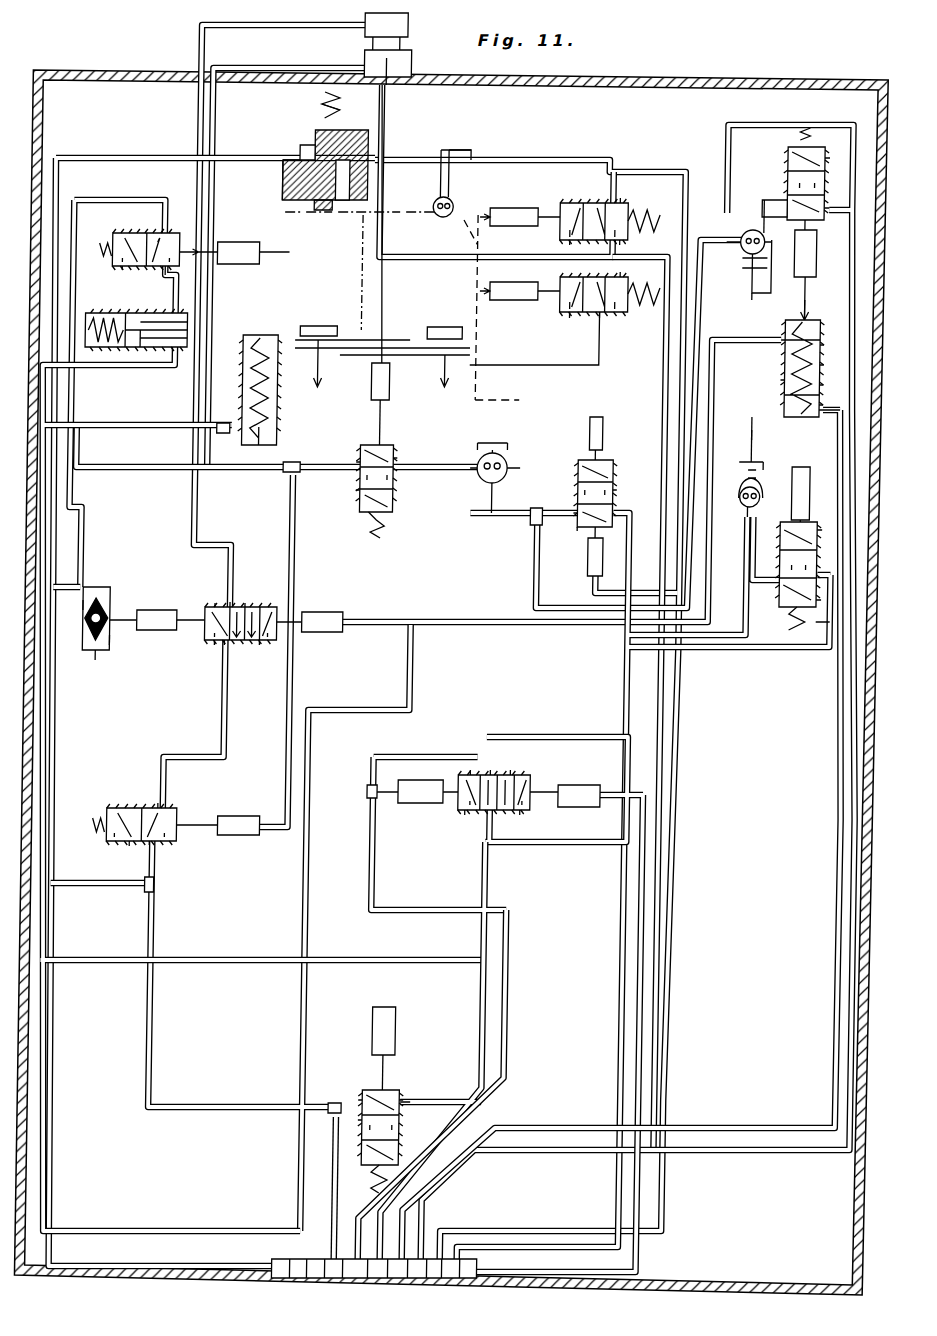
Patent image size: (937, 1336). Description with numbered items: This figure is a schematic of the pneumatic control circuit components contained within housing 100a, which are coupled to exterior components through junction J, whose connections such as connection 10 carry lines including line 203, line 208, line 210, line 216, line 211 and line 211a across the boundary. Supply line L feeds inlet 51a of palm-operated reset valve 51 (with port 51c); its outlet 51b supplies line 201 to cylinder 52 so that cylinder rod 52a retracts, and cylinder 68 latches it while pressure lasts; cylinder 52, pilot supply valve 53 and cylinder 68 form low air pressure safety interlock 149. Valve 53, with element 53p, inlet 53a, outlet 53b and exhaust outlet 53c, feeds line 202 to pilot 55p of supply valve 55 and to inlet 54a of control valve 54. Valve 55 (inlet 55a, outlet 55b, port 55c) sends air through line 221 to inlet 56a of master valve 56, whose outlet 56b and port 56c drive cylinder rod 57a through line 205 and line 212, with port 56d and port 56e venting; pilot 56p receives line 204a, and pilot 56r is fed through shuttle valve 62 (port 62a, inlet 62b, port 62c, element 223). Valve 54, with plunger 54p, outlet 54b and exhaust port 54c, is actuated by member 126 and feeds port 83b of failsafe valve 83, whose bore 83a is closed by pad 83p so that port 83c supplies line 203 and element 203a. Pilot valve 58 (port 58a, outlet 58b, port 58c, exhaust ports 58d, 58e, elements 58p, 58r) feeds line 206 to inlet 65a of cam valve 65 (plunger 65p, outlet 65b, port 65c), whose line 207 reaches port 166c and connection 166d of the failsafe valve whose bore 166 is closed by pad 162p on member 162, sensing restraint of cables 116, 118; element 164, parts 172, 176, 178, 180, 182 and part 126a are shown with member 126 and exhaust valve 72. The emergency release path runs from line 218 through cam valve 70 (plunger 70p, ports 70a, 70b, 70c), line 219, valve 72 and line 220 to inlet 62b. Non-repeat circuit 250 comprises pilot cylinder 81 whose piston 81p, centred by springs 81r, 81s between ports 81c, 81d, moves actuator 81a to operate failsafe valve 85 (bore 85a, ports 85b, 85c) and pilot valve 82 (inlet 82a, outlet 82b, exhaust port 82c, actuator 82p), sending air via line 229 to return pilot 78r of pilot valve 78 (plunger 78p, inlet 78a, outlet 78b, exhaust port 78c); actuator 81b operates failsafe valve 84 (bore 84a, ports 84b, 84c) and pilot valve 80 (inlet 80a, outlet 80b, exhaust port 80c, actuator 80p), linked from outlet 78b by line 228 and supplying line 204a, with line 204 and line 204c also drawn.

The control housing 100a is at (74, 72).
The control system 149 is at (151, 142).
The air supply line 212 is at (253, 22).
The air line 205 is at (293, 68).
The air line 220 is at (231, 165).
The air line 207 is at (559, 148).
The air line 202 is at (85, 199).
The air line 219 is at (431, 258).
The air line 216 is at (605, 730).
The air line 203 is at (794, 125).
The air line 204a is at (351, 625).
The air line 228 is at (701, 665).
The air line 229 is at (743, 230).
The air line 204 is at (815, 418).
The air line 204c is at (820, 335).
The air line 221 is at (263, 738).
The air line 218 is at (595, 372).
The air line 201 is at (110, 372).
The air line 211a is at (73, 585).
The air line 211 is at (496, 886).
The air line 210 is at (637, 778).
The air line 206 is at (555, 845).
The air line 208 is at (628, 165).
The air supply connection 57a is at (379, 108).
The piston 172 is at (294, 142).
The piston port 180 is at (279, 158).
The piston face 182 is at (281, 128).
The spring 176 is at (333, 98).
The spring seat 178 is at (333, 112).
The axis line 72 is at (271, 196).
The cam follower 166 is at (425, 203).
The cam follower link 166c is at (432, 160).
The cam follower link 166d is at (466, 145).
The restraint cable linkage 126 is at (390, 252).
The linkage 126a is at (465, 350).
The valve 53 is at (161, 234).
The valve port 53b is at (155, 240).
The valve mechanical pilot 53p is at (248, 242).
The valve port 53c is at (174, 274).
The valve port 53a is at (137, 270).
The cylinder 52 is at (90, 312).
The cylinder rod 52a is at (159, 300).
The spring cylinder 68 is at (258, 334).
The link 162 is at (346, 325).
The link block 164 is at (357, 340).
The link block 162p is at (437, 338).
The right hand restraint cable 116 is at (316, 416).
The left hand restraint cable 118 is at (459, 407).
The valve mechanical pilot 54p is at (355, 380).
The valve 54 is at (357, 518).
The valve port 54c is at (353, 462).
The valve port 54a is at (353, 488).
The valve port 54b is at (393, 458).
The shuttle valve 83 is at (488, 490).
The shuttle valve pilot 83p is at (505, 446).
The shuttle valve port 83c is at (503, 465).
The shuttle valve port 83a is at (494, 483).
The shuttle valve port 83b is at (452, 470).
The air line fitting 203a is at (477, 480).
The valve 78 is at (614, 462).
The valve cam pilot 78p is at (602, 425).
The valve air return 78r is at (586, 572).
The valve port 78c is at (572, 510).
The valve port 78b is at (613, 494).
The valve port 78a is at (576, 530).
The valve 65 is at (561, 204).
The valve cam pilot 65p is at (512, 206).
The valve port 65b is at (621, 214).
The valve port 65a is at (613, 242).
The valve port 65c is at (563, 243).
The valve 70 is at (622, 318).
The valve cam pilot 70p is at (490, 308).
The valve port 70b is at (609, 278).
The valve port 70c is at (567, 318).
The valve port 70a is at (595, 325).
The valve 82 is at (822, 200).
The valve port 82b is at (792, 140).
The valve port 82c is at (819, 172).
The valve port 82a is at (822, 216).
The valve mechanical pilot 82p is at (811, 258).
The shuttle valve 85 is at (745, 228).
The shuttle valve port 85a is at (734, 235).
The shuttle valve port 85c is at (783, 250).
The shuttle valve port 85b is at (750, 307).
The spring cylinder 81 is at (817, 322).
The cylinder rod 81a is at (805, 305).
The cylinder spring 81s is at (777, 338).
The cylinder port 81d is at (839, 347).
The cylinder piston 81p is at (839, 364).
The cylinder port 81c is at (837, 385).
The cylinder return 81r is at (778, 378).
The cylinder port 81b is at (828, 436).
The shuttle valve 84 is at (742, 462).
The shuttle valve port 84a is at (756, 415).
The shuttle valve port 84c is at (762, 462).
The shuttle valve port 84b is at (743, 512).
The valve 80 is at (790, 625).
The valve mechanical pilot 80p is at (807, 484).
The valve port 80a is at (818, 528).
The valve port 80b is at (752, 600).
The valve port 80c is at (818, 650).
The control circuit 250 is at (751, 687).
The shuttle valve 62 is at (107, 592).
The shuttle valve port 62a is at (96, 588).
The shuttle valve port 62c is at (111, 640).
The shuttle valve port 62b is at (99, 655).
The air pilot 223 is at (129, 606).
The valve 56 is at (205, 612).
The valve port 56r is at (158, 600).
The valve port 56c is at (215, 605).
The valve port 56b is at (235, 605).
The valve air pilot 56p is at (319, 612).
The valve port 56e is at (261, 644).
The valve port 56d is at (209, 645).
The valve port 56a is at (213, 645).
The valve 55 is at (182, 812).
The valve port 55b is at (160, 806).
The valve air pilot 55p is at (244, 816).
The valve port 55a is at (132, 846).
The valve port 55c is at (173, 848).
The valve 58 is at (537, 772).
The valve air return 58r is at (410, 780).
The valve air pilot 58p is at (588, 785).
The valve port 58e is at (472, 768).
The valve port 58a is at (493, 770).
The valve port 58d is at (530, 745).
The valve port 58b is at (467, 815).
The valve port 58c is at (522, 814).
The palm valve 51 is at (408, 1092).
The valve port 51c is at (365, 1098).
The valve port 51b is at (407, 1100).
The valve port 51a is at (365, 1118).
The terminal strip 10 is at (384, 1250).